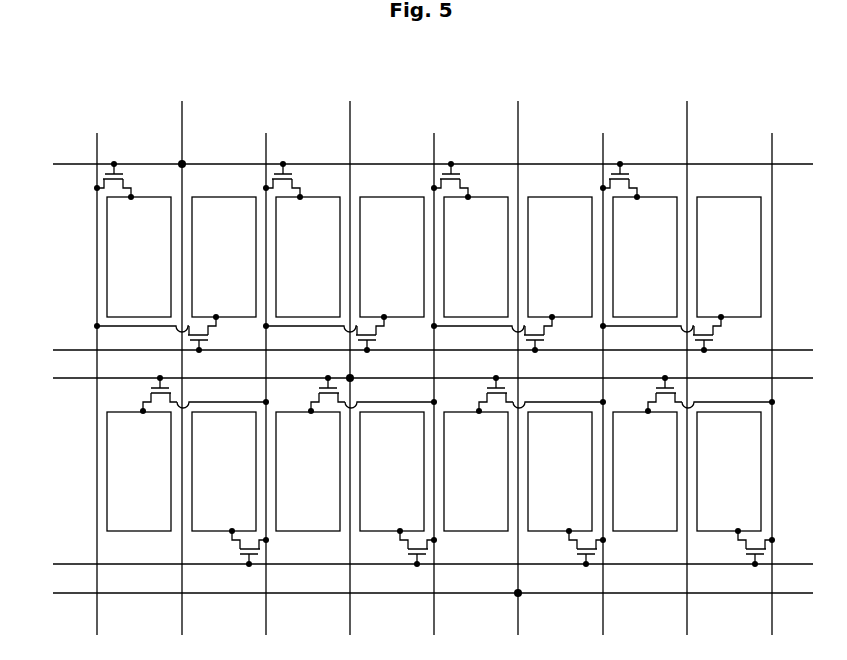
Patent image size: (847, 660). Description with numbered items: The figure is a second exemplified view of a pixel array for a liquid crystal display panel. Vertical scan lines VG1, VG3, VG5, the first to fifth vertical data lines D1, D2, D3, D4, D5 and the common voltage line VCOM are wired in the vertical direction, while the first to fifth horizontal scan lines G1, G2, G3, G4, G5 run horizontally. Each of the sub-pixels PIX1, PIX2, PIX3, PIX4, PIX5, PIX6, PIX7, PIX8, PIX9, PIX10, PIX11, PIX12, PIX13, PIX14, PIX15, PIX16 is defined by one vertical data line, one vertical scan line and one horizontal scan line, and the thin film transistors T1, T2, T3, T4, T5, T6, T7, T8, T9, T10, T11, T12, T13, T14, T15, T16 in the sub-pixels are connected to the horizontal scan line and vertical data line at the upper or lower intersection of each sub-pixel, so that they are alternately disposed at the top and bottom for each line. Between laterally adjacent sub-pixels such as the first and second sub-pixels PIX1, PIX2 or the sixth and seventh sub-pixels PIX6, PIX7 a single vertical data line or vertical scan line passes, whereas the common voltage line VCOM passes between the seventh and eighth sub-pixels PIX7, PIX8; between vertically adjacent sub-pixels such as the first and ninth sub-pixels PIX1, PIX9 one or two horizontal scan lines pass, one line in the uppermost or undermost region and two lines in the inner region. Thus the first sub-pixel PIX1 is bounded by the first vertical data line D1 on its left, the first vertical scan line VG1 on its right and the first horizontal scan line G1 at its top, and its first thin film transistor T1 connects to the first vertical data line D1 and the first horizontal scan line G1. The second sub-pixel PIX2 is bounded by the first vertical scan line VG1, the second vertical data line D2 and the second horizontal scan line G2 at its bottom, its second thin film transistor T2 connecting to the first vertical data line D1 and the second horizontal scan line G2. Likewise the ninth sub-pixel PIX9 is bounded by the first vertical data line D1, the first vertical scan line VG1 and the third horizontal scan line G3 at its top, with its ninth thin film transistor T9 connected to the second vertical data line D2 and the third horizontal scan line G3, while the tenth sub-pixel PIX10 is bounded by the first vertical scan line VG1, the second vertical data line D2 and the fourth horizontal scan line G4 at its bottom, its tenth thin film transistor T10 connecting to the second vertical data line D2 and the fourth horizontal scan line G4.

The first horizontal scan line G1 is at (421, 164).
The second horizontal scan line G2 is at (421, 350).
The third horizontal scan line G3 is at (421, 378).
The fourth horizontal scan line G4 is at (421, 564).
The fifth horizontal scan line G5 is at (421, 593).
The first vertical data line D1 is at (97, 372).
The second vertical data line D2 is at (266, 372).
The third vertical data line D3 is at (434, 372).
The fourth vertical data line D4 is at (603, 372).
The fifth vertical data line D5 is at (772, 372).
The first vertical scan line VG1 is at (182, 357).
The third vertical scan line VG3 is at (350, 357).
The vertical scan line VG5 is at (518, 357).
The common voltage line VCOM is at (687, 357).
The first sub-pixel PIX1 is at (139, 257).
The second sub-pixel PIX2 is at (224, 257).
The third sub-pixel PIX3 is at (308, 257).
The fourth sub-pixel PIX4 is at (392, 257).
The fifth sub-pixel PIX5 is at (476, 257).
The sixth sub-pixel PIX6 is at (560, 257).
The seventh sub-pixel PIX7 is at (645, 257).
The eighth sub-pixel PIX8 is at (729, 257).
The ninth sub-pixel PIX9 is at (139, 471).
The tenth sub-pixel PIX10 is at (224, 471).
The eleventh sub-pixel PIX11 is at (308, 471).
The twelfth sub-pixel PIX12 is at (392, 471).
The thirteenth sub-pixel PIX13 is at (476, 471).
The fourteenth sub-pixel PIX14 is at (560, 471).
The fifteenth sub-pixel PIX15 is at (645, 471).
The sixteenth sub-pixel PIX16 is at (729, 471).
The first thin film transistor T1 is at (123, 180).
The second thin film transistor T2 is at (165, 333).
The thin film transistor T3 is at (292, 180).
The thin film transistor T4 is at (333, 333).
The thin film transistor T5 is at (460, 180).
The thin film transistor T6 is at (501, 333).
The thin film transistor T7 is at (629, 180).
The thin film transistor T8 is at (670, 333).
The ninth thin film transistor T9 is at (196, 394).
The tenth thin film transistor T10 is at (235, 547).
The thin film transistor T11 is at (359, 394).
The thin film transistor T12 is at (403, 547).
The thin film transistor T13 is at (527, 394).
The thin film transistor T14 is at (572, 547).
The thin film transistor T15 is at (696, 394).
The thin film transistor T16 is at (741, 547).